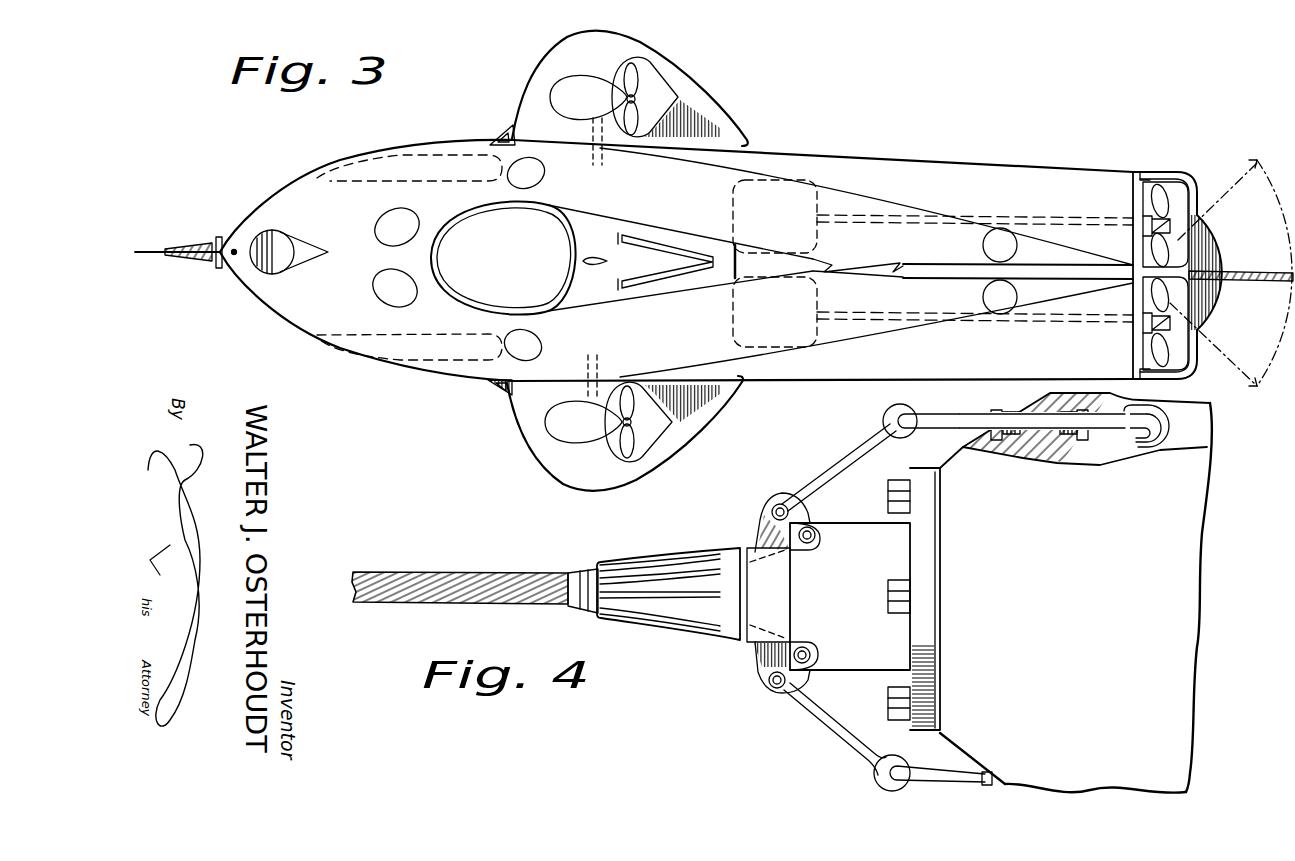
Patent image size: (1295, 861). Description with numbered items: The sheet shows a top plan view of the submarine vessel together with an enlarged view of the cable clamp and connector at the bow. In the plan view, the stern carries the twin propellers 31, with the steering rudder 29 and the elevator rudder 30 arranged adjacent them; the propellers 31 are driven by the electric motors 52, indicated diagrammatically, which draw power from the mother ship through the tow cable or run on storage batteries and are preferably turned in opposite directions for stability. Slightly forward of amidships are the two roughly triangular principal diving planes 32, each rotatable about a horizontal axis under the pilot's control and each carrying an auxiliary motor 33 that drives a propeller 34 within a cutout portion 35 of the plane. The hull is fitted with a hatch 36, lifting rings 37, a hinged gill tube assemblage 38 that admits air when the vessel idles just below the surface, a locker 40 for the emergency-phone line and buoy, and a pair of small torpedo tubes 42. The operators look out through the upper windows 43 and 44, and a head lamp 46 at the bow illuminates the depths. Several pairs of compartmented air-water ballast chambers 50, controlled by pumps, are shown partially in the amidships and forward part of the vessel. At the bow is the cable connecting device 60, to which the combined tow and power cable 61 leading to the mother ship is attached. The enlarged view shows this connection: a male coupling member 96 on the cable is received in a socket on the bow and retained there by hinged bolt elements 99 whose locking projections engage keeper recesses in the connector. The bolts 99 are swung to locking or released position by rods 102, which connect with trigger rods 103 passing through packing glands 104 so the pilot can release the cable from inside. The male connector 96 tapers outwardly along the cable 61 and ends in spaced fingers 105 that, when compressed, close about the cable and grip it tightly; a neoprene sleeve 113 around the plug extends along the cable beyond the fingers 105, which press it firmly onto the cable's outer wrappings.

In FIG. 3, the steering rudder 29 is at (1270, 281).
In FIG. 3, the elevator rudder 30 is at (1197, 197).
In FIG. 3, the twin propellers 31 is at (1162, 190).
In FIG. 3, the principal diving planes 32 is at (546, 81).
In FIG. 3, the auxiliary motor 33 is at (583, 92).
In FIG. 3, the propeller 34 is at (634, 72).
In FIG. 3, the cutout portion 35 is at (668, 96).
In FIG. 3, the hatch 36 is at (476, 300).
In FIG. 3, the lifting rings 37 is at (490, 134).
In FIG. 3, the hinged gill tube assemblage 38 is at (690, 238).
In FIG. 3, the locker 40 is at (822, 262).
In FIG. 3, the small torpedo tubes 42 is at (363, 167).
In FIG. 3, the upper window 43 is at (396, 228).
In FIG. 3, the upper window 44 is at (536, 175).
In FIG. 3, the head lamp 46 is at (284, 231).
In FIG. 3, the compartmented air-water ballast chambers 50 is at (945, 172).
In FIG. 3, the electric motors 52 is at (933, 263).
In FIG. 3, the cable connecting device 60 is at (208, 262).
In FIG. 4, the cable connecting device 60 is at (865, 599).
In FIG. 3, the combined tow and power cable 61 is at (160, 251).
In FIG. 4, the combined tow and power cable 61 is at (534, 597).
In FIG. 4, the male coupling member 96 is at (733, 558).
In FIG. 4, the bolt elements 99 is at (758, 524).
In FIG. 4, the rods 102 is at (842, 457).
In FIG. 4, the trigger rods 103 is at (960, 418).
In FIG. 4, the packing glands 104 is at (1004, 410).
In FIG. 4, the spaced fingers 105 is at (677, 618).
In FIG. 4, the sleeve 113 is at (583, 613).